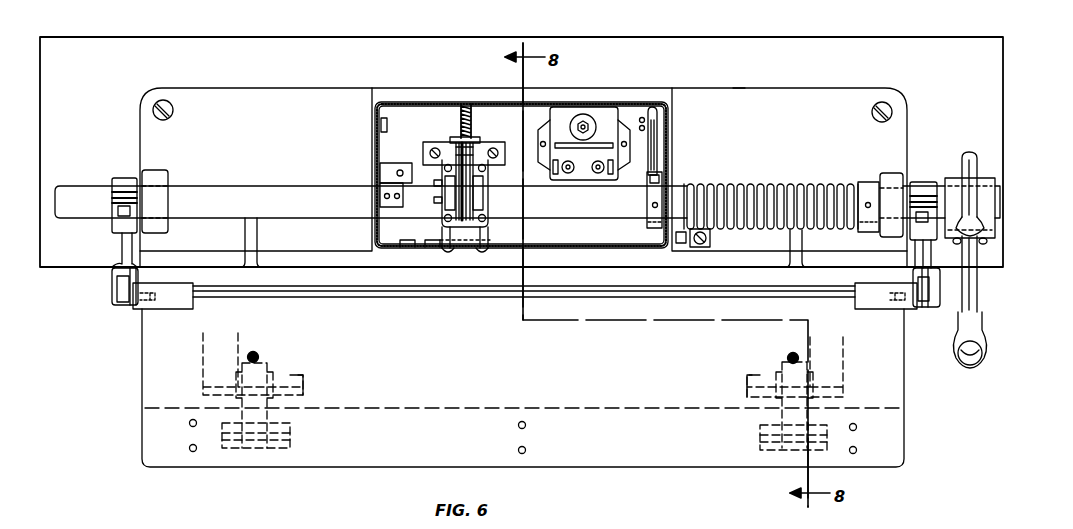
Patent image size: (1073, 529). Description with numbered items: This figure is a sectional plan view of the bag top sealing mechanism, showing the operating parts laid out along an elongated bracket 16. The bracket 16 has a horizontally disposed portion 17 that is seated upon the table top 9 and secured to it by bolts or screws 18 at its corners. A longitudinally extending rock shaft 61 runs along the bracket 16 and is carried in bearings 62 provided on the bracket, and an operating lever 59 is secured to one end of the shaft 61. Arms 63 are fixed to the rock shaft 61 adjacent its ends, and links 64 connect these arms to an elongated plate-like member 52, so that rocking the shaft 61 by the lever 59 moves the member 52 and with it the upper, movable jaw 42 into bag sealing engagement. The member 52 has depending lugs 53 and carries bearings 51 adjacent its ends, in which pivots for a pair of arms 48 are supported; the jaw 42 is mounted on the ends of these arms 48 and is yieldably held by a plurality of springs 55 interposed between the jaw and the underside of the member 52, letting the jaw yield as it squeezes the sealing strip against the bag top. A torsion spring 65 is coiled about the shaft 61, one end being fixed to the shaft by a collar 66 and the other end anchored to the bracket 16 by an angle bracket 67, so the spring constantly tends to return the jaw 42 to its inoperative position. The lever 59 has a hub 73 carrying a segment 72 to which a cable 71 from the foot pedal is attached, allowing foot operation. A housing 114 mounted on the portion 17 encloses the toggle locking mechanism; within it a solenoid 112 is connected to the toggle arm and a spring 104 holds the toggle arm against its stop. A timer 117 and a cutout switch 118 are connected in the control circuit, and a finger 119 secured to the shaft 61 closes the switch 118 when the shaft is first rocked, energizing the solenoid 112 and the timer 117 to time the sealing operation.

The table top 9 is at (985, 58).
The elongated bracket 16 is at (738, 88).
The horizontally disposed portion 17 is at (805, 110).
The bolts or screws 18 is at (154, 107).
The movable jaw 42 is at (452, 409).
The arms 48 is at (268, 414).
The bearings 51 is at (303, 380).
The elongated plate-like member 52 is at (622, 444).
The depending lugs 53 is at (203, 373).
The springs 55 is at (190, 446).
The operating lever 59 is at (978, 297).
The rock shaft 61 is at (299, 196).
The bearings 62 is at (169, 173).
The arms 63 is at (115, 248).
The links 64 is at (126, 306).
The torsion spring 65 is at (758, 184).
The collar 66 is at (866, 182).
The angle bracket 67 is at (694, 248).
The cable 71 is at (971, 153).
The segment 72 is at (985, 158).
The hub 73 is at (990, 178).
The spring 104 is at (458, 118).
The solenoid 112 is at (468, 222).
The housing 114 is at (428, 101).
The timer 117 is at (603, 118).
The cutout switch 118 is at (660, 142).
The finger 119 is at (645, 185).